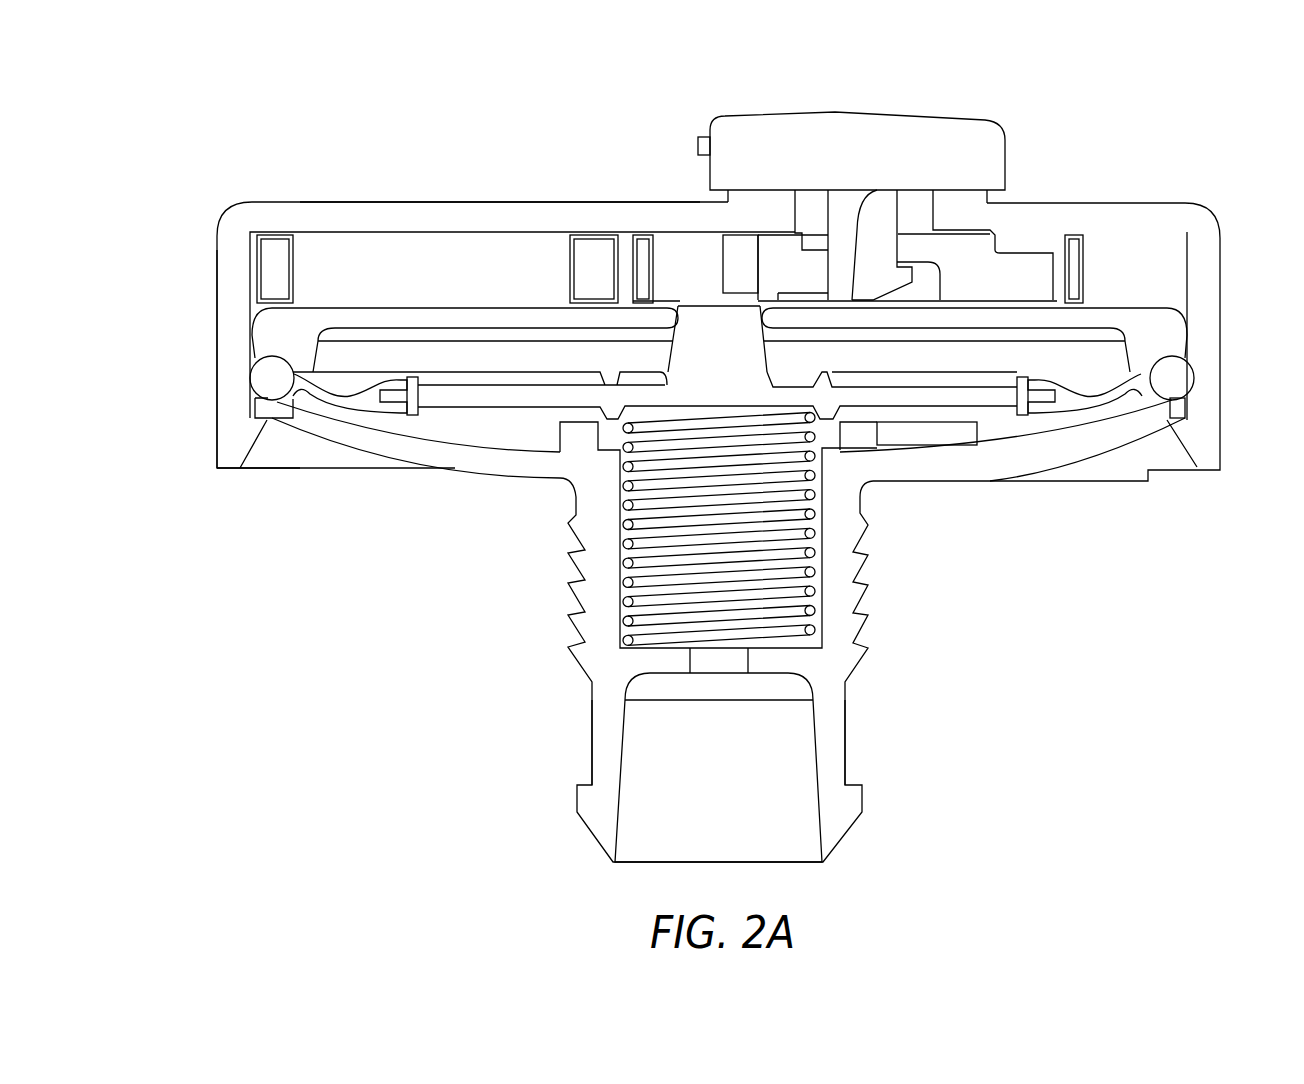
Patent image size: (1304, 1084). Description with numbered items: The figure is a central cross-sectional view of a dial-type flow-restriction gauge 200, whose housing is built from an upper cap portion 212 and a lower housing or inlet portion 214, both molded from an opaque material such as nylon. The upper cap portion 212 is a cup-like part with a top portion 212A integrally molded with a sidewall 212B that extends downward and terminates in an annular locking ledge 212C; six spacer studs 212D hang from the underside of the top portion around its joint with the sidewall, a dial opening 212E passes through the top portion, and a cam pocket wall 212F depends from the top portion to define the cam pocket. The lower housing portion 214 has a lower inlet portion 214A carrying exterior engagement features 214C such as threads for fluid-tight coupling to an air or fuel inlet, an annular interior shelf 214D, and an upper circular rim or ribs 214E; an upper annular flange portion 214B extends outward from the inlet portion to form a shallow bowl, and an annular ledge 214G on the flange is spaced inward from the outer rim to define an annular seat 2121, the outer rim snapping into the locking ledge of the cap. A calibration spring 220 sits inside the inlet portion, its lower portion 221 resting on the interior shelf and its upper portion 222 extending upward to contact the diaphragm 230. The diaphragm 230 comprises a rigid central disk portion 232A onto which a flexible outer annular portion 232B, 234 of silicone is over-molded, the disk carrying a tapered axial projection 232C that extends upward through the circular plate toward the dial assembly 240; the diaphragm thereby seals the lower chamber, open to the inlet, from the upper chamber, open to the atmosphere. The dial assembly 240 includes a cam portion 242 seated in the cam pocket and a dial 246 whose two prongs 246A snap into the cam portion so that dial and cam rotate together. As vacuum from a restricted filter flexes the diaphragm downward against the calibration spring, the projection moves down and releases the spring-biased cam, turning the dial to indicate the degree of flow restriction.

The flow-restriction gauge 200 is at (212, 83).
The upper cap portion 212 is at (223, 207).
The top portion 212A is at (343, 202).
The sidewall 212B is at (228, 292).
The annular locking ledge 212C is at (230, 440).
The spacer studs 212D is at (583, 262).
The dial opening 212E is at (1073, 238).
The cam pocket wall 212F is at (922, 198).
The annular seat 2121 is at (278, 398).
The lower housing portion 214 is at (552, 566).
The lower inlet portion 214A is at (255, 407).
The upper annular flange portion 214B is at (385, 430).
The exterior engagement features 214C is at (900, 742).
The annular interior shelf 214D is at (810, 675).
The upper circular rim or ribs 214E is at (920, 433).
The annular ledge 214G is at (1180, 408).
The calibration spring 220 is at (797, 590).
The lower portion 221 is at (620, 642).
The upper portion 222 is at (647, 428).
The diaphragm 230 is at (1018, 365).
The central disk portion 232A is at (990, 397).
The flexible outer annular portion 232B is at (1170, 380).
The tapered axial projection 232C is at (705, 312).
The flexible outer annular portion 234 is at (1165, 330).
The dial assembly 240 is at (738, 115).
The cam portion 242 is at (983, 265).
The dial 246 is at (838, 112).
The prongs 246A is at (881, 213).